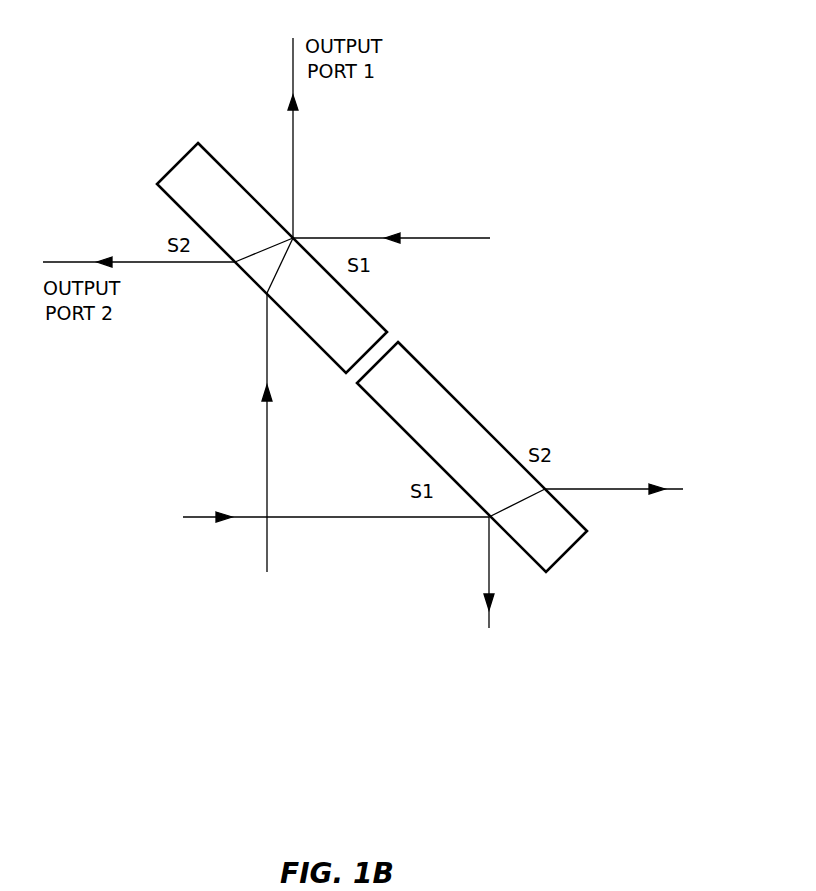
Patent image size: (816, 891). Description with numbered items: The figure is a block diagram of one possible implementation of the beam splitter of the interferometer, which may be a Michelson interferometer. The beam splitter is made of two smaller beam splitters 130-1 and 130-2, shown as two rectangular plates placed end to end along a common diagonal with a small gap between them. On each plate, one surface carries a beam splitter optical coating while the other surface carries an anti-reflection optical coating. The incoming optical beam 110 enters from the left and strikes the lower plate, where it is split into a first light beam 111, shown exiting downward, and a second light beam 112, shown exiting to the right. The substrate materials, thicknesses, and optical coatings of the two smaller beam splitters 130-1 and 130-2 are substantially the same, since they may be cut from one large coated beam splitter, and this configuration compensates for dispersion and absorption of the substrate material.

The smaller beam splitter 130-1 is at (168, 149).
The smaller beam splitter 130-2 is at (575, 563).
The optical beam 110 is at (209, 513).
The first light beam 111 is at (489, 613).
The second light beam 112 is at (634, 488).